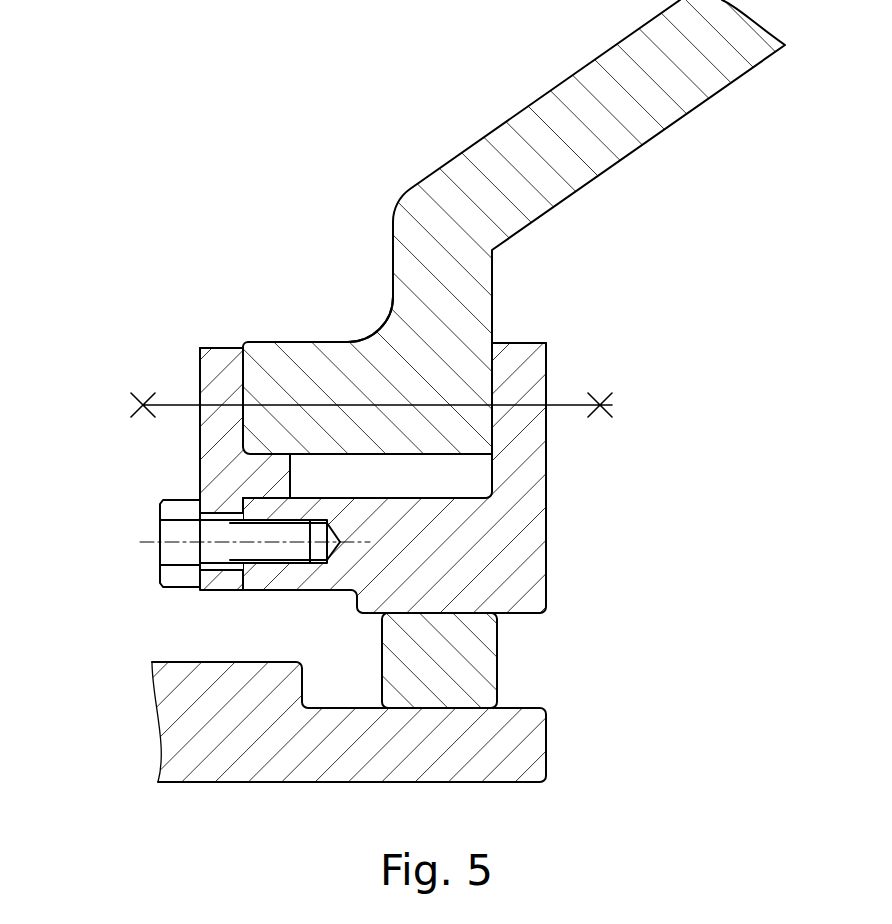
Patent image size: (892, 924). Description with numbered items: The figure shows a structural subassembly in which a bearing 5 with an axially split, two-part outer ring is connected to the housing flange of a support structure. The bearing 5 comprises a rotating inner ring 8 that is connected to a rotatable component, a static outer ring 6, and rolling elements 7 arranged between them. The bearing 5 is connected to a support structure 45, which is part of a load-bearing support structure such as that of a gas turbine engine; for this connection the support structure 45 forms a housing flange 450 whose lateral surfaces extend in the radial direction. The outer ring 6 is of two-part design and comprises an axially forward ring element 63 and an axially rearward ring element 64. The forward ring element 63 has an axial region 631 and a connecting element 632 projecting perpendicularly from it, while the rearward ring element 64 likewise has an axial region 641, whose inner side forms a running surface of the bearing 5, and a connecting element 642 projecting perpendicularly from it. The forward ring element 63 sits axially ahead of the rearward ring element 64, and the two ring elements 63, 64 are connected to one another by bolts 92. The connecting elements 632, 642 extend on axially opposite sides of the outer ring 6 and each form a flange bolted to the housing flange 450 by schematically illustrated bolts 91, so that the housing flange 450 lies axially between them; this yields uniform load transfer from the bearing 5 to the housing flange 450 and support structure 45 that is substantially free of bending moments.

The bearing 5 is at (640, 641).
The outer ring 6 is at (588, 467).
The rolling elements 7 is at (472, 668).
The inner ring 8 is at (178, 722).
The support structure 45 is at (620, 143).
The housing flange 450 is at (318, 362).
The bolts 91 is at (403, 397).
The bolts 92 is at (178, 577).
The axially forward ring element 63 is at (212, 440).
The axial region 631 is at (270, 483).
The connecting element 632 is at (206, 373).
The axially rearward ring element 64 is at (525, 530).
The axial region 641 is at (445, 558).
The connecting element 642 is at (533, 372).